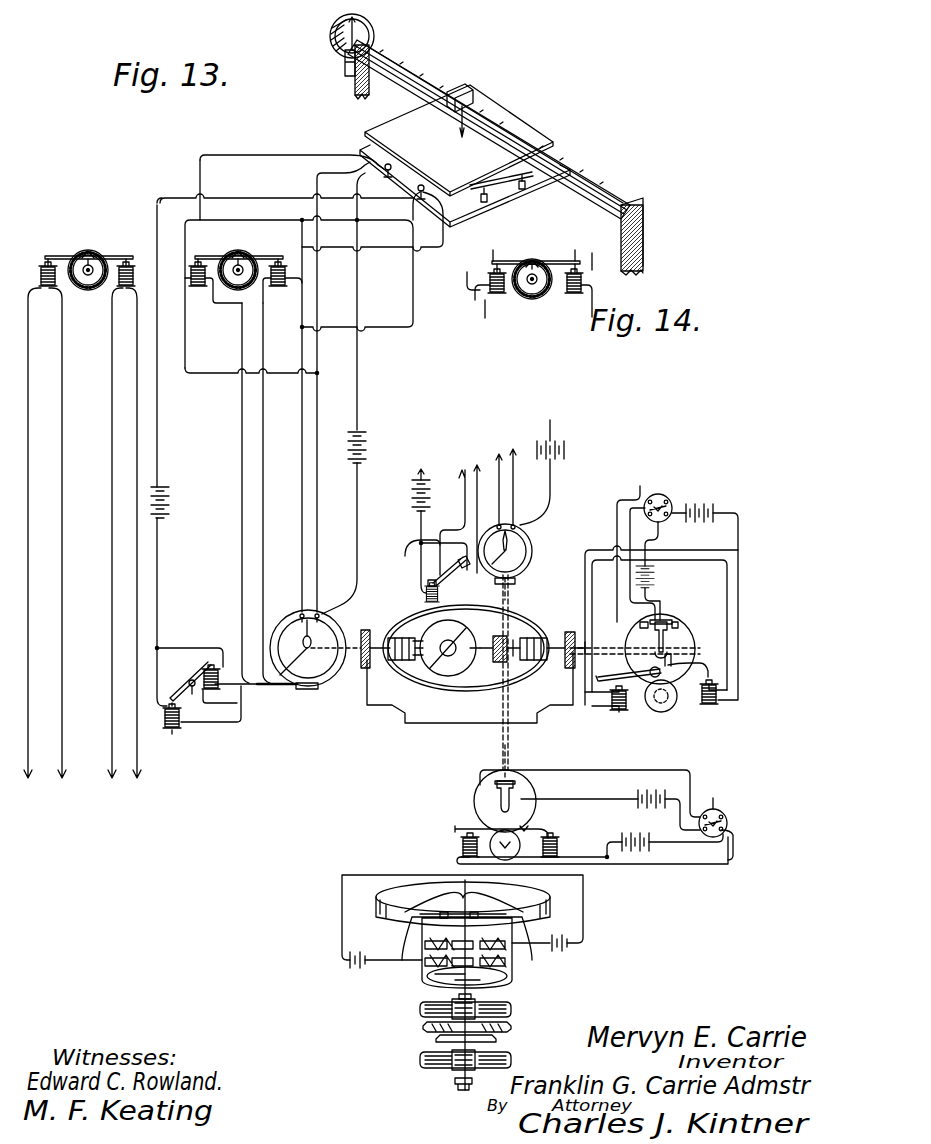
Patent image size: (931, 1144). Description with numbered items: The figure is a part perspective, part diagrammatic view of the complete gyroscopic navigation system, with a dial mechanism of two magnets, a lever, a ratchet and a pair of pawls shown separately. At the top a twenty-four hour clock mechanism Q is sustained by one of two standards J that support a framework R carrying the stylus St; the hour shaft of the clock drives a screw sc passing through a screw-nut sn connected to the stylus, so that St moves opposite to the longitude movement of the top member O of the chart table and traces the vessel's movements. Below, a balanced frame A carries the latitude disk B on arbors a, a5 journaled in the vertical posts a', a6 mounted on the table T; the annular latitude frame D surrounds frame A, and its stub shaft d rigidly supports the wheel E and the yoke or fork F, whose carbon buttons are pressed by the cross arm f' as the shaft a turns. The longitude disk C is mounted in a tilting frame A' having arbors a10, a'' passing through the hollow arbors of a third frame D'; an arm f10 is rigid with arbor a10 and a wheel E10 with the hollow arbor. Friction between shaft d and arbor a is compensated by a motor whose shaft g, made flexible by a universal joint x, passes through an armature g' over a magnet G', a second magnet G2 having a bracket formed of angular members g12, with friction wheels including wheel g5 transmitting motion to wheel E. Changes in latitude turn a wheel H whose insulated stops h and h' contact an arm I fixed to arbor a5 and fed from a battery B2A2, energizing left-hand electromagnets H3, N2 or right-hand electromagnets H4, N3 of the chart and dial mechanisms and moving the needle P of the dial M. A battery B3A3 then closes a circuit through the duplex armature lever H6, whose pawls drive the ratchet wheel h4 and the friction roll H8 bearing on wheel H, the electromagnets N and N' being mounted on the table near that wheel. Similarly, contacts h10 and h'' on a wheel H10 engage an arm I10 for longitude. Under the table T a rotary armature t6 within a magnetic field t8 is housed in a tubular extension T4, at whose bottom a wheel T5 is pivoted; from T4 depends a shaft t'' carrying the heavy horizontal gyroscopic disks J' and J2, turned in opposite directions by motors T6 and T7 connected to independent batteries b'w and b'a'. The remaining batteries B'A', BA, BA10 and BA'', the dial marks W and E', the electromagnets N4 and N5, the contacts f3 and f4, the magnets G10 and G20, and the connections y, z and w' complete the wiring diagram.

In FIG. 13, the clock mechanism Q is at (329, 40).
In FIG. 13, the standard J is at (488, 160).
In FIG. 13, the frame work R is at (437, 76).
In FIG. 13, the screw sc is at (397, 62).
In FIG. 13, the screw-nut sn is at (478, 90).
In FIG. 13, the stylus St is at (457, 126).
In FIG. 13, the top member of chart table O is at (540, 140).
In FIG. 13, the left hand electromagnet H3 is at (385, 172).
In FIG. 13, the right hand electromagnet H4 is at (418, 194).
In FIG. 13, the needle or pointer P is at (98, 256).
In FIG. 14, the needle or pointer P is at (525, 261).
In FIG. 13, the dial M is at (84, 290).
In FIG. 14, the dial M is at (532, 298).
In FIG. 13, the coil W is at (35, 269).
In FIG. 13, the coil E' is at (133, 269).
In FIG. 13, the electromagnet N4 is at (45, 533).
In FIG. 13, the electromagnet N5 is at (124, 533).
In FIG. 13, the left hand electromagnet N2 is at (213, 282).
In FIG. 14, the left hand electromagnet N2 is at (486, 293).
In FIG. 13, the right hand electromagnet N3 is at (282, 283).
In FIG. 14, the right hand electromagnet N3 is at (578, 285).
In FIG. 13, the battery B3A3 is at (290, 493).
In FIG. 13, the battery B2A2 is at (461, 517).
In FIG. 13, the electromagnet N is at (299, 631).
In FIG. 13, the electromagnet N' is at (336, 614).
In FIG. 13, the duplex armature lever H6 is at (185, 688).
In FIG. 13, the ratchet wheel h4 is at (192, 694).
In FIG. 13, the vertical post or standard a6 is at (256, 676).
In FIG. 13, the plain wheel or roll H8 is at (306, 692).
In FIG. 13, the wheel H is at (330, 674).
In FIG. 13, the arm I is at (308, 648).
In FIG. 13, the stop or contact h' is at (292, 608).
In FIG. 13, the stop or contact h is at (323, 607).
In FIG. 13, the arbor a5 is at (352, 645).
In FIG. 13, the latitude frame D is at (466, 650).
In FIG. 13, the third frame D' is at (474, 623).
In FIG. 13, the vertical post or standard a' is at (458, 687).
In FIG. 13, the balanced frame or support A is at (405, 640).
In FIG. 13, the latitude gyroscopic disk B is at (446, 647).
In FIG. 13, the longitude gyroscopic disk C is at (500, 636).
In FIG. 13, the tilting frame A' is at (511, 662).
In FIG. 13, the stub shaft d is at (567, 640).
In FIG. 13, the arm I10 is at (505, 551).
In FIG. 13, the contact h10 is at (496, 528).
In FIG. 13, the contact h'' is at (521, 489).
In FIG. 13, the wheel H10 is at (520, 574).
In FIG. 13, the arbor a'' is at (528, 672).
In FIG. 13, the universal joint x is at (670, 500).
In FIG. 13, the wire y is at (636, 547).
In FIG. 13, the wire z is at (617, 521).
In FIG. 13, the battery B'A' is at (705, 602).
In FIG. 13, the battery BA is at (657, 571).
In FIG. 13, the wheel E is at (667, 649).
In FIG. 13, the yoke or fork F is at (665, 640).
In FIG. 13, the cross arm f' is at (674, 604).
In FIG. 13, the contact f3 is at (640, 624).
In FIG. 13, the contact f4 is at (680, 625).
In FIG. 13, the arbor a is at (635, 640).
In FIG. 13, the armature g' is at (628, 667).
In FIG. 13, the angular member g12 is at (704, 658).
In FIG. 13, the friction wheel g5 is at (661, 705).
In FIG. 13, the magnet G' is at (606, 710).
In FIG. 13, the magnet G2 is at (713, 706).
In FIG. 13, the wheel E10 is at (480, 802).
In FIG. 13, the arm f10 is at (520, 784).
In FIG. 13, the arbor a10 is at (515, 750).
In FIG. 13, the battery BA10 is at (610, 810).
In FIG. 13, the switch w' is at (729, 829).
In FIG. 13, the shaft g is at (501, 843).
In FIG. 13, the electromagnet G10 is at (580, 848).
In FIG. 13, the electromagnet G20 is at (558, 838).
In FIG. 13, the battery BA'' is at (638, 862).
In FIG. 13, the table T is at (463, 985).
In FIG. 13, the magnetic field t8 is at (485, 914).
In FIG. 13, the tubular extension T4 is at (422, 972).
In FIG. 13, the wheel T5 is at (505, 982).
In FIG. 13, the rotary armature t6 is at (512, 960).
In FIG. 13, the battery b'w is at (356, 972).
In FIG. 13, the battery b'a' is at (553, 959).
In FIG. 13, the electric motor T6 is at (512, 1008).
In FIG. 13, the shaft t'' is at (431, 1001).
In FIG. 13, the gyroscopic disk J' is at (453, 1030).
In FIG. 13, the gyroscopic disk J2 is at (420, 1058).
In FIG. 13, the electric motor T7 is at (514, 1056).